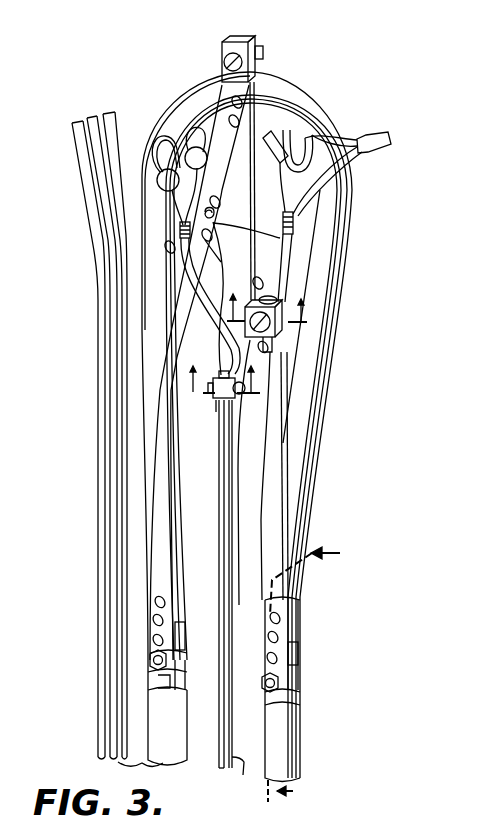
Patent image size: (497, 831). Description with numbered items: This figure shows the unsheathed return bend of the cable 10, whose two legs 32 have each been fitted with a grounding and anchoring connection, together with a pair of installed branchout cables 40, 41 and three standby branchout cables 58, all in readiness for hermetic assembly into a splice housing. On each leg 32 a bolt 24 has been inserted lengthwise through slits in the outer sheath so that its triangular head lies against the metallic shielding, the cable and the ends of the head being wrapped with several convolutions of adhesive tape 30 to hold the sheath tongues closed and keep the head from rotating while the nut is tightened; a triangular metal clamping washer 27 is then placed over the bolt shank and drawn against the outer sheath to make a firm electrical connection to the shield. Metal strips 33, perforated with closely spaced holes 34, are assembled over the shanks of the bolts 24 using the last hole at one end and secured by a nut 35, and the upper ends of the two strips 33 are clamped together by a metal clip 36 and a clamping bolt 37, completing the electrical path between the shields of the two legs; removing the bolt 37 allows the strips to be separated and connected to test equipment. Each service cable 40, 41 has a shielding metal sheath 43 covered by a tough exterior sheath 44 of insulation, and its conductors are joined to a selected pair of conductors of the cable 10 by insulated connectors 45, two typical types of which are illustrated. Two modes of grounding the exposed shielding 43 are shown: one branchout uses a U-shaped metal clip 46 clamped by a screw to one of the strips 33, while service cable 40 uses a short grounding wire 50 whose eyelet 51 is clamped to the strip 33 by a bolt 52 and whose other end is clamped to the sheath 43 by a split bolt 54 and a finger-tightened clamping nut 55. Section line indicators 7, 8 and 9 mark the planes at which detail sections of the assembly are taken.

The cable 10 is at (74, 4).
The bolt 24 is at (147, 667).
The clamping washer 27 is at (153, 680).
The adhesive tape 30 is at (187, 624).
The legs 32 is at (170, 738).
The metal strips 33 is at (172, 380).
The holes 34 is at (156, 618).
The nut 35 is at (151, 659).
The metal clip 36 is at (240, 40).
The clamping bolt 37 is at (264, 53).
The service cable 40 is at (214, 767).
The service cable 41 is at (245, 776).
The shielding metal sheath 43 is at (288, 268).
The exterior sheath 44 is at (223, 459).
The insulated connectors 45 is at (205, 145).
The U-shaped metal clip 46 is at (284, 324).
The wire 50 is at (218, 262).
The eyelet 51 is at (227, 188).
The bolt 52 is at (212, 225).
The split bolt 54 is at (240, 379).
The clamping nut 55 is at (223, 378).
The standby branchout cables 58 is at (102, 722).
The section line 7- 7 is at (329, 679).
The section line 8- 8 is at (272, 291).
The section line 9- 9 is at (223, 402).